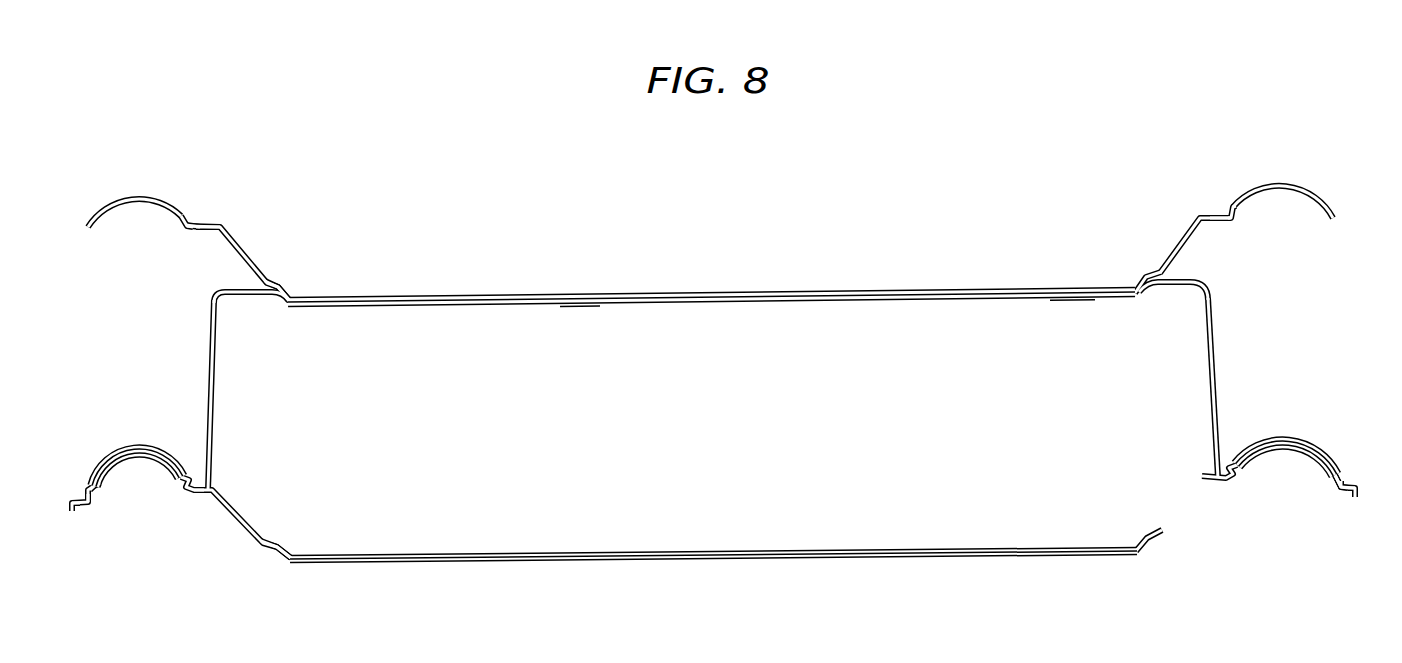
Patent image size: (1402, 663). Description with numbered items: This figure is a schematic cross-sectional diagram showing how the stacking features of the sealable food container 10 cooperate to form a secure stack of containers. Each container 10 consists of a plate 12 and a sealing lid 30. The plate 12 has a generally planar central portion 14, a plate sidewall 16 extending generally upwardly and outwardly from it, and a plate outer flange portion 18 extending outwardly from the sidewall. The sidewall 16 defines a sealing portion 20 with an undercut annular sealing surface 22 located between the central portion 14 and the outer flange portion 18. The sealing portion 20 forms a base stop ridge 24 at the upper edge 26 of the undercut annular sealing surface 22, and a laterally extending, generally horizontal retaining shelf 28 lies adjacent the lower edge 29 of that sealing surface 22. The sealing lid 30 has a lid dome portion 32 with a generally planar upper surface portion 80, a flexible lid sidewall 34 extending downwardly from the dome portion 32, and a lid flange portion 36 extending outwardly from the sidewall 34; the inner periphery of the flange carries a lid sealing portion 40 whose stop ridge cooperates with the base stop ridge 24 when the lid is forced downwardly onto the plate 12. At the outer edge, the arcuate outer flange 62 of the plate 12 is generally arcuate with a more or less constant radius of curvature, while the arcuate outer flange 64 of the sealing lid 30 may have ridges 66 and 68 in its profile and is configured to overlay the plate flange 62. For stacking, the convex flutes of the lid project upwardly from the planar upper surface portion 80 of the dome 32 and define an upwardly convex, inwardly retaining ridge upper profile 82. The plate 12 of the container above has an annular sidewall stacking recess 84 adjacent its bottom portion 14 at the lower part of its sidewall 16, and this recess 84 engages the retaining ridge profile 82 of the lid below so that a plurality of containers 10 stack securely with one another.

The sealable food container 10 is at (182, 365).
The plate 12 is at (240, 239).
The planar central portion 14 is at (594, 296).
The plate sidewall 16 is at (1178, 238).
The plate outer flange portion 18 is at (119, 198).
The sealing portion 20 is at (188, 244).
The undercut annular sealing surface 22 is at (1221, 211).
The base stop ridge 24 is at (189, 218).
The upper edge 26 is at (192, 221).
The retaining shelf 28 is at (1205, 211).
The lower edge 29 is at (196, 224).
The sealing lid 30 is at (1222, 333).
The lid dome portion 32 is at (573, 307).
The flexible lid sidewall 34 is at (214, 411).
The lid flange portion 36 is at (127, 445).
The lid sealing portion 40 is at (215, 470).
The outer arcuate flange of plate 62 is at (102, 471).
The arcuate outer flange of sealing lid 64 is at (110, 446).
The ridge 66 is at (97, 461).
The ridge 68 is at (180, 449).
The planar upper surface portion 80 is at (1070, 300).
The retaining ridge upper profile 82 is at (278, 303).
The annular sidewall stacking recess 84 is at (267, 283).